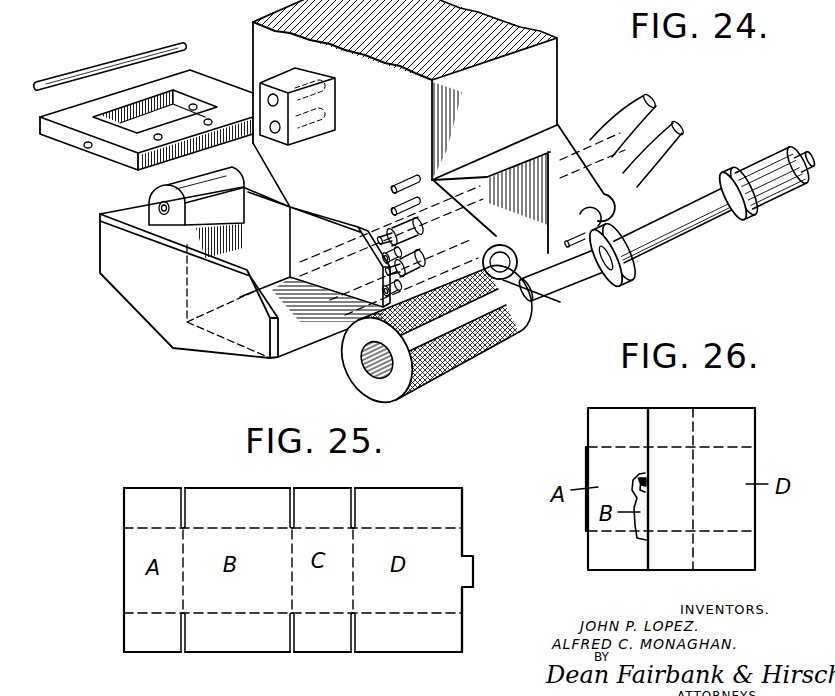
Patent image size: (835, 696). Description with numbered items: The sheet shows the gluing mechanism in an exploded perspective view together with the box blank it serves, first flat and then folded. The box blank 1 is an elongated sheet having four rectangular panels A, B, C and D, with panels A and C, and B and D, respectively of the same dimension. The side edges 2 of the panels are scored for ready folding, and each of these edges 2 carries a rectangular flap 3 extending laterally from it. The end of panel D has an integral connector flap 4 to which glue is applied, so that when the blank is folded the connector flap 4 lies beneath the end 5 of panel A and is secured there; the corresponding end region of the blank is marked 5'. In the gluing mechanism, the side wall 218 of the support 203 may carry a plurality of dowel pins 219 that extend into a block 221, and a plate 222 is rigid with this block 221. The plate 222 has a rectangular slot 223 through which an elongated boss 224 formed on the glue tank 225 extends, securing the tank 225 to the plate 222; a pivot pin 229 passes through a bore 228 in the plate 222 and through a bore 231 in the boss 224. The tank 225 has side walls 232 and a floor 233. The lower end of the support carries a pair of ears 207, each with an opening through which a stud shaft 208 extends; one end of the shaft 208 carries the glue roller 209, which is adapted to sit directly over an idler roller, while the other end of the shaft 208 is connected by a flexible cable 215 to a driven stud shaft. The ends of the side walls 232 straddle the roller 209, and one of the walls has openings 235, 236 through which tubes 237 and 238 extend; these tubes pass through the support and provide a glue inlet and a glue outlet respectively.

In FIG. 24, the pivot pin 229 is at (116, 62).
In FIG. 24, the plate 222 is at (204, 77).
In FIG. 24, the rectangular slot 223 is at (125, 131).
In FIG. 24, the bore 228 is at (85, 148).
In FIG. 24, the block 221 is at (312, 134).
In FIG. 24, the side wall 218 is at (412, 108).
In FIG. 24, the support 203 is at (548, 72).
In FIG. 24, the dowel pins 219 is at (403, 179).
In FIG. 24, the opening 235 is at (342, 252).
In FIG. 24, the opening 236 is at (337, 288).
In FIG. 24, the elongated boss 224 is at (190, 222).
In FIG. 24, the glue tank 225 is at (133, 302).
In FIG. 24, the side walls 232 is at (247, 331).
In FIG. 24, the floor 233 is at (310, 331).
In FIG. 24, the bore 231 is at (102, 215).
In FIG. 24, the glue roller 209 is at (477, 358).
In FIG. 24, the ears 207 is at (634, 192).
In FIG. 24, the tube 237 is at (652, 100).
In FIG. 24, the tube 238 is at (674, 128).
In FIG. 24, the stud shaft 208 is at (703, 224).
In FIG. 24, the flexible cable 215 is at (792, 152).
In FIG. 25, the box blank 1 is at (128, 486).
In FIG. 25, the side edges 2 is at (150, 528).
In FIG. 25, the rectangular flap 3 is at (212, 500).
In FIG. 25, the connector flap 4 is at (473, 572).
In FIG. 26, the connector flap 4 is at (646, 492).
In FIG. 25, the end of panel A 5 is at (104, 570).
In FIG. 26, the end of panel A 5 is at (664, 489).
In FIG. 25, the end panel 5' is at (485, 570).